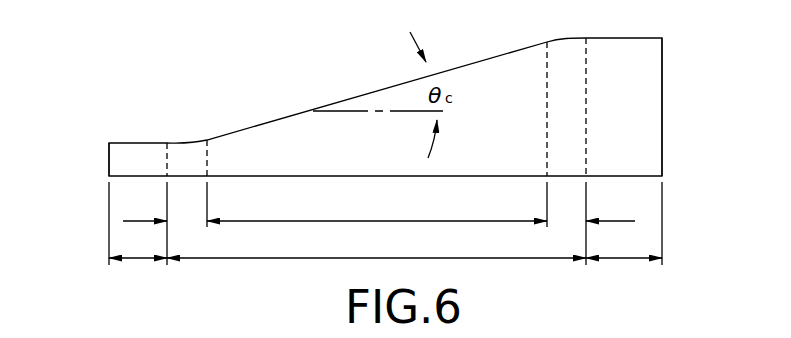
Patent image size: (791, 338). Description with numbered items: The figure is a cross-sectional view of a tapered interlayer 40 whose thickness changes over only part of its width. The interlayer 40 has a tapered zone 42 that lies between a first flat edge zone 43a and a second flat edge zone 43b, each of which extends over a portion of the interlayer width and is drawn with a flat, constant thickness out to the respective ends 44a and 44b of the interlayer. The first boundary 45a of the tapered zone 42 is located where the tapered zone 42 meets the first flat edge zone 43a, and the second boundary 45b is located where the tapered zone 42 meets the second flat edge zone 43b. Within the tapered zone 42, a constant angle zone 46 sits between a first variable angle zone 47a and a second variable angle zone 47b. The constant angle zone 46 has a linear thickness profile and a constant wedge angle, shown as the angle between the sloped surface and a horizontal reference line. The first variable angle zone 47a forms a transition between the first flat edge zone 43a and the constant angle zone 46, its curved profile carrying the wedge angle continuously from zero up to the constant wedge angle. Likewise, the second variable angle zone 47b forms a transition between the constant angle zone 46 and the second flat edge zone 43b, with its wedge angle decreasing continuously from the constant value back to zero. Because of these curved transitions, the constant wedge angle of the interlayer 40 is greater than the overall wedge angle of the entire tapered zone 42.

The interlayer 40 is at (194, 65).
The tapered zone 42 is at (376, 223).
The first flat edge zone 43a is at (138, 223).
The second flat edge zone 43b is at (624, 223).
The first end 44a is at (109, 160).
The second end 44b is at (662, 92).
The first boundary 45a is at (167, 160).
The second boundary 45b is at (586, 79).
The constant angle zone 46 is at (377, 208).
The first variable angle zone 47a is at (165, 183).
The second variable angle zone 47b is at (591, 134).